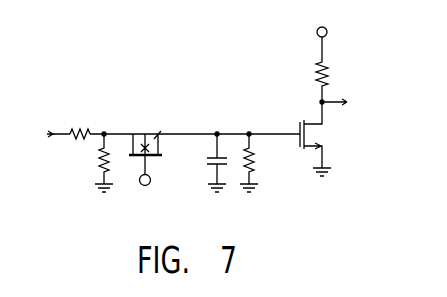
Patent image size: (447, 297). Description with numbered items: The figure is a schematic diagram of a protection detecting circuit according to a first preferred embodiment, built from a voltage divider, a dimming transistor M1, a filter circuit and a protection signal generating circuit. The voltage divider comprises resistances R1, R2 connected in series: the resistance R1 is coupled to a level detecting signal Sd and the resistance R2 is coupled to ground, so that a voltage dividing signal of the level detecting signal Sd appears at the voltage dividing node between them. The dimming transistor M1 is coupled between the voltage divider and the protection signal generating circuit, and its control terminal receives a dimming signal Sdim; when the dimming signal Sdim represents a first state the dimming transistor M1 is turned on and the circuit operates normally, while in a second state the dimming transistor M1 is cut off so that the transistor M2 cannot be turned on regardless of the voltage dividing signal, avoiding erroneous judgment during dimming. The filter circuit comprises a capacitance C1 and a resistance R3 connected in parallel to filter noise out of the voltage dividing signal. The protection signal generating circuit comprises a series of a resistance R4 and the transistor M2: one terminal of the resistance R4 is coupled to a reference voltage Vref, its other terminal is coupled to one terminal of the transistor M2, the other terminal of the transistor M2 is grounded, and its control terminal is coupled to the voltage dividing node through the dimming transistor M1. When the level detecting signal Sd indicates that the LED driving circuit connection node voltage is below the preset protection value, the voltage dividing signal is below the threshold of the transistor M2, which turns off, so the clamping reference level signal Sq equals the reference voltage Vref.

The level detecting signal Sd is at (40, 137).
The resistance R1 is at (80, 125).
The resistance R2 is at (95, 163).
The dimming transistor M1 is at (145, 143).
The dimming signal Sdim is at (148, 195).
The capacitance C1 is at (206, 163).
The resistance R3 is at (260, 163).
The transistor M2 is at (323, 139).
The clamping reference level signal Sq is at (346, 102).
The resistance R4 is at (334, 69).
The reference voltage Vref is at (322, 21).